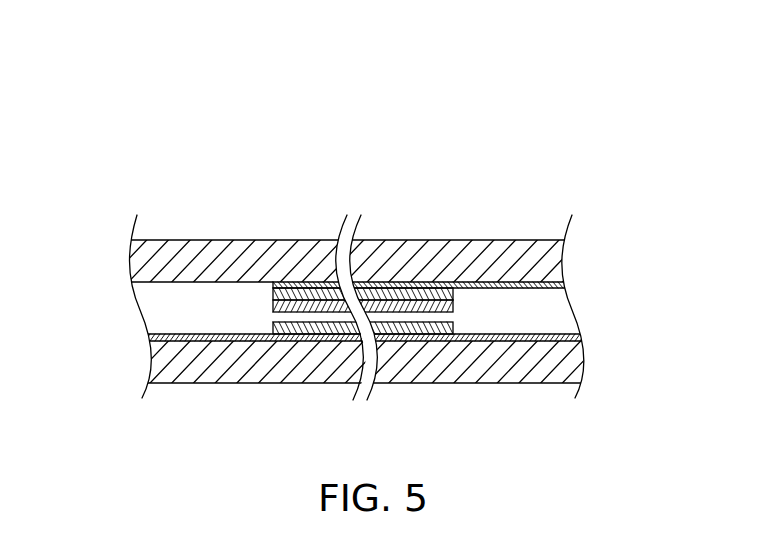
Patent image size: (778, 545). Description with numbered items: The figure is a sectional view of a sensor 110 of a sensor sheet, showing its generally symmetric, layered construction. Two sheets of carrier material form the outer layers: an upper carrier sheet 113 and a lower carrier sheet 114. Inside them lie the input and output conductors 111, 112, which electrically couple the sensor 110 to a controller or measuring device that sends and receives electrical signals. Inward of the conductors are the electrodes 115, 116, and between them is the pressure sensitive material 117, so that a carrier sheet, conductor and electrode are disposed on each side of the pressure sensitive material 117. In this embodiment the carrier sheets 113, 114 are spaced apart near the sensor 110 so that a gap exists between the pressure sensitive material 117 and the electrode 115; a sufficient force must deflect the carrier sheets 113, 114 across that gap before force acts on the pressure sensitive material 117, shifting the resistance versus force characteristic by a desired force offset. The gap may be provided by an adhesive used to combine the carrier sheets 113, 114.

The sensor 110 is at (192, 152).
The input conductor 111 is at (562, 285).
The output conductor 112 is at (153, 340).
The carrier sheet 113 is at (523, 250).
The carrier sheet 114 is at (495, 370).
The electrode 115 is at (453, 297).
The electrode 116 is at (272, 325).
The pressure sensitive material 117 is at (453, 308).